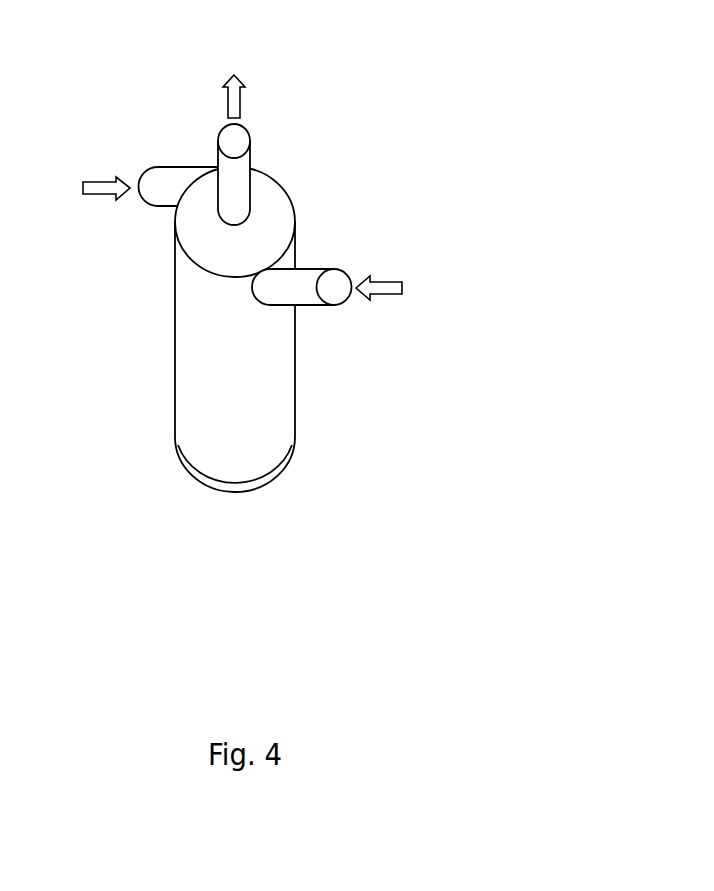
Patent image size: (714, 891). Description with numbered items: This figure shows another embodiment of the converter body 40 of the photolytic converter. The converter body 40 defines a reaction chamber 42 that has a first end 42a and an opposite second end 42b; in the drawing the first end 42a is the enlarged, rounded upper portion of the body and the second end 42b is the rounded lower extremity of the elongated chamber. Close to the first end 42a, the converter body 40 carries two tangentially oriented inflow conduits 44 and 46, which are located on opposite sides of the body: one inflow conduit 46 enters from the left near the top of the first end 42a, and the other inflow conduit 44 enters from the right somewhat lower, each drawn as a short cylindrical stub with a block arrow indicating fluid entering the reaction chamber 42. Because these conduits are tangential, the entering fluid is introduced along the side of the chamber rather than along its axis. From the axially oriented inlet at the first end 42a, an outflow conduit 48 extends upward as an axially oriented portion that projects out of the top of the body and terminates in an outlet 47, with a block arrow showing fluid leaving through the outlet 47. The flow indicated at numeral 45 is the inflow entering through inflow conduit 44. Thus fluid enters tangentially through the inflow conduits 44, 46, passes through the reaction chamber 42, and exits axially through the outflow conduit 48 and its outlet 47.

The converter body 40 is at (321, 166).
The reaction chamber 42 is at (277, 392).
The first end 42a is at (277, 223).
The second end 42b is at (268, 481).
The inflow conduit 44 is at (322, 305).
The inlet flow 45 is at (335, 285).
The inflow conduit 46 is at (148, 168).
The outlet 47 is at (236, 139).
The outflow conduit 48 is at (250, 137).